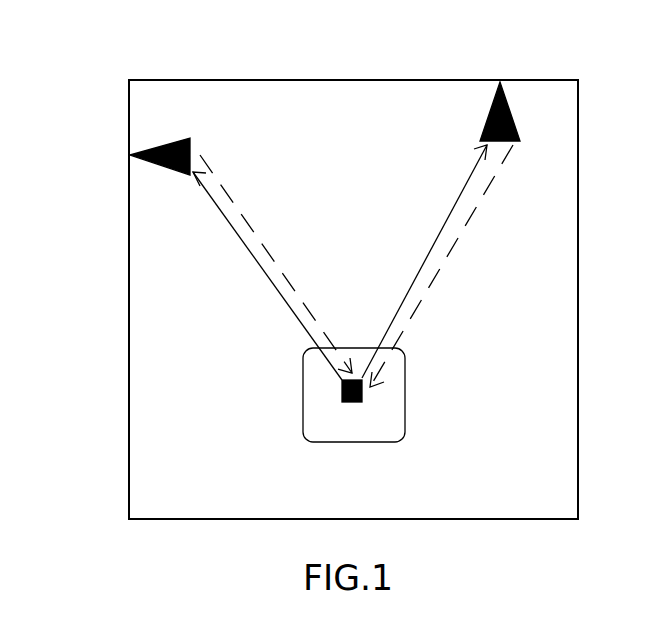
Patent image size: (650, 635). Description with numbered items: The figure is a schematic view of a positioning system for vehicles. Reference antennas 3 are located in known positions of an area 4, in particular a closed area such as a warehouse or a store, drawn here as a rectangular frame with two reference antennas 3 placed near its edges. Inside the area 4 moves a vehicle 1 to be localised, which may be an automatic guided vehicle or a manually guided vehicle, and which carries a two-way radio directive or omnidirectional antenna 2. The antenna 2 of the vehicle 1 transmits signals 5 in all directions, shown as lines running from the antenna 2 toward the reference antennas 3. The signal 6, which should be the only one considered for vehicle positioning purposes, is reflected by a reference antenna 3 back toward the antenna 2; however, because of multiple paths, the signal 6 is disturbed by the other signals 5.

The vehicle 1 is at (405, 400).
The two-way radio antenna 2 is at (347, 402).
The reference antenna 3 is at (167, 170).
The area 4 is at (228, 80).
The signals 5 is at (250, 253).
The signal 6 is at (268, 250).